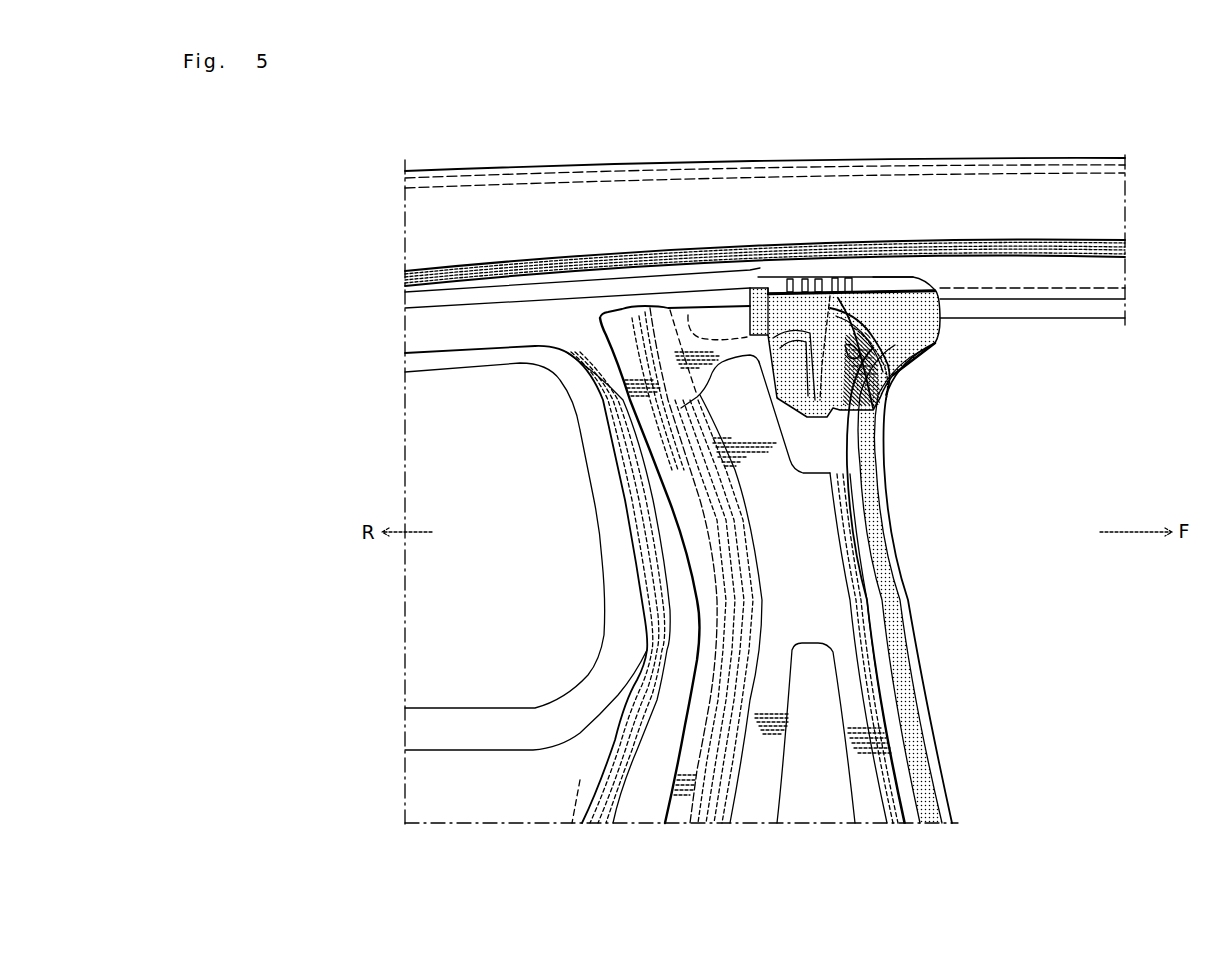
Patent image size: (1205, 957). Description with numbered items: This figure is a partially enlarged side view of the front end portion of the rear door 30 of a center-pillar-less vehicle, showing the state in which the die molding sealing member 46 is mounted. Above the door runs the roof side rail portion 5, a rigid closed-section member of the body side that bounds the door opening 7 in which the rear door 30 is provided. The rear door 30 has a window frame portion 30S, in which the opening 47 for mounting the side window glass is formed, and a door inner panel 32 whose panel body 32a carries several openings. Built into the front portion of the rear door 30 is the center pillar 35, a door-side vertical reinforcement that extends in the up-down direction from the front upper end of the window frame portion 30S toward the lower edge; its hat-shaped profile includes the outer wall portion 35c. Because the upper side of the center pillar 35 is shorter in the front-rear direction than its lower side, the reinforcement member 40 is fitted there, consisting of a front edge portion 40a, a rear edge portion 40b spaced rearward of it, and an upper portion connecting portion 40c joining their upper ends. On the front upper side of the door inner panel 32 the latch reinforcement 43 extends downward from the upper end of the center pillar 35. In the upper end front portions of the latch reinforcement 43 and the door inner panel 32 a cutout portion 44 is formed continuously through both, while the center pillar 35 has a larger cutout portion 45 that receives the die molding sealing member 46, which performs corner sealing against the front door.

The roof side rail portion 5 is at (667, 177).
The door opening 7 is at (1043, 318).
The rear door 30 is at (513, 267).
The window frame portion 30S is at (425, 331).
The door inner panel 32 is at (897, 380).
The panel body 32a is at (462, 777).
The center pillar 35 is at (684, 627).
The outer wall portion 35c is at (805, 808).
The reinforcement member 40 is at (881, 613).
The front edge portion 40a is at (863, 728).
The rear edge portion 40b is at (753, 787).
The upper portion connecting portion 40c is at (807, 532).
The latch reinforcement 43 is at (888, 393).
The cutout portion 44 is at (840, 290).
The cutout portion 45 is at (885, 408).
The die molding sealing member 46 is at (931, 278).
The opening 47 is at (476, 486).